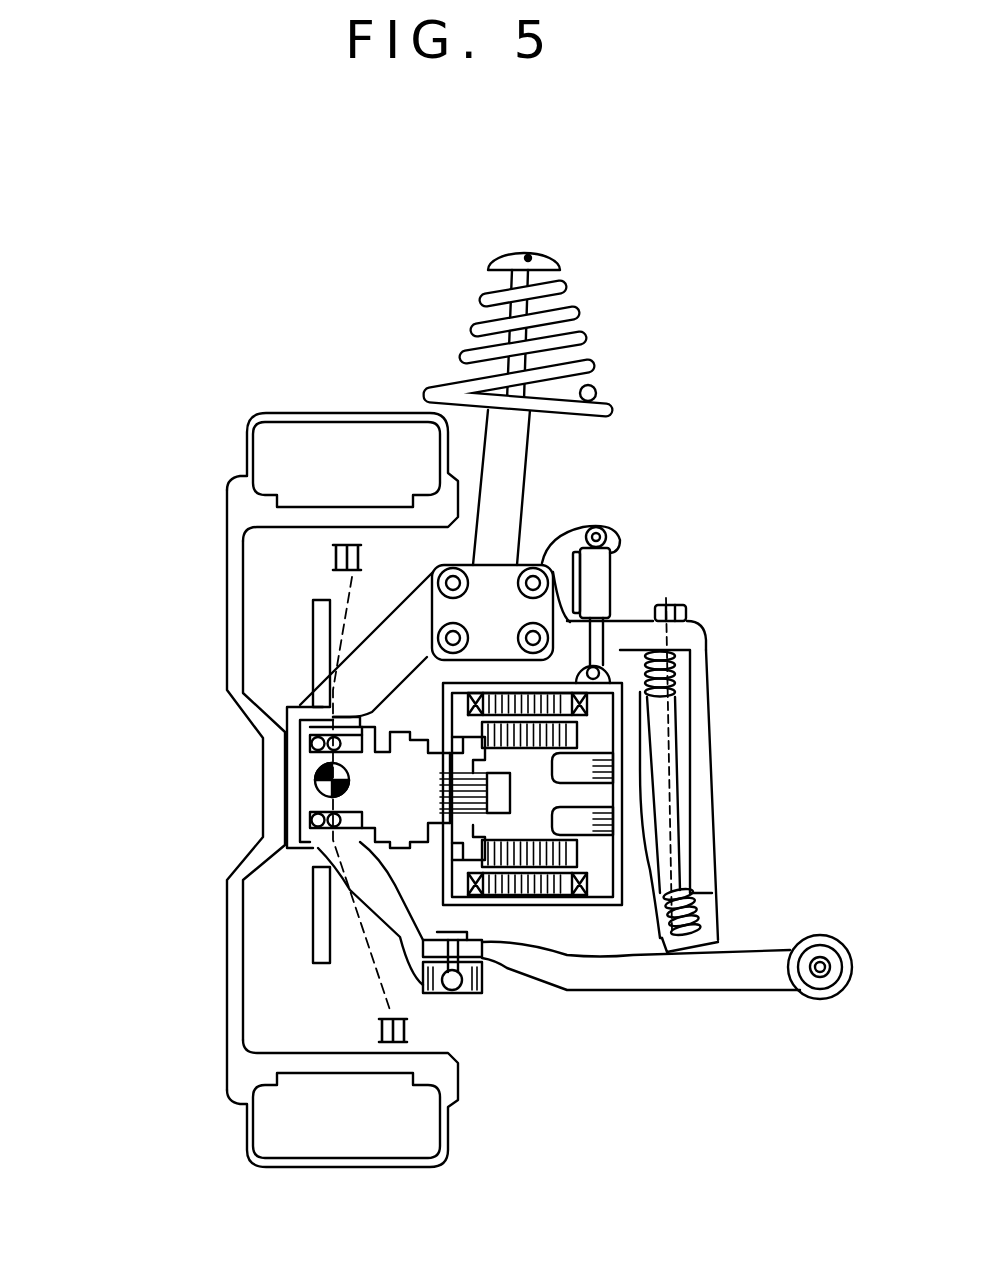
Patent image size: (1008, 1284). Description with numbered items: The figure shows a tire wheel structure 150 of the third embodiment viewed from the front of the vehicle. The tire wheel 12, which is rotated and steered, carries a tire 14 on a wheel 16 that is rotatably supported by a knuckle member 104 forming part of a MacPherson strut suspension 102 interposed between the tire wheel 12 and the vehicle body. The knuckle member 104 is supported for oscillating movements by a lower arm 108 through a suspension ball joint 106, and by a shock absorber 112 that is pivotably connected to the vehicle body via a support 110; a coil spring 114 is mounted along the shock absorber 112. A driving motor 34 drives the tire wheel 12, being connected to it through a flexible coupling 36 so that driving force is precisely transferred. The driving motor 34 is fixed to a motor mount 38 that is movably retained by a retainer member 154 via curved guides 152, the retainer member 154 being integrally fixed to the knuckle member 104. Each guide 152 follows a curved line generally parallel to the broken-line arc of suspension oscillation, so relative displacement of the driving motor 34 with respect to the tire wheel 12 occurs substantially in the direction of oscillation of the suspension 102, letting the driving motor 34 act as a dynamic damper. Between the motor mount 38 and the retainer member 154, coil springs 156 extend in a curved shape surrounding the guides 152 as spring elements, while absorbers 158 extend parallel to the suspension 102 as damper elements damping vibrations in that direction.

The tire wheel 12 is at (117, 902).
The tire 14 is at (233, 1137).
The wheel 16 is at (222, 893).
The driving motor 34 is at (625, 846).
The flexible coupling 36 is at (400, 850).
The motor mount 38 is at (573, 906).
The MacPherson strut suspension 102 is at (631, 319).
The knuckle member 104 is at (390, 613).
The suspension ball joint 106 is at (470, 990).
The lower arm 108 is at (663, 993).
The support 110 is at (517, 251).
The shock absorber 112 is at (523, 503).
The coil spring 114 is at (477, 313).
The tire wheel structure 150 is at (707, 468).
The curved guide 152 is at (667, 768).
The retainer member 154 is at (710, 723).
The coil spring 156 is at (675, 678).
The absorber 158 is at (612, 563).